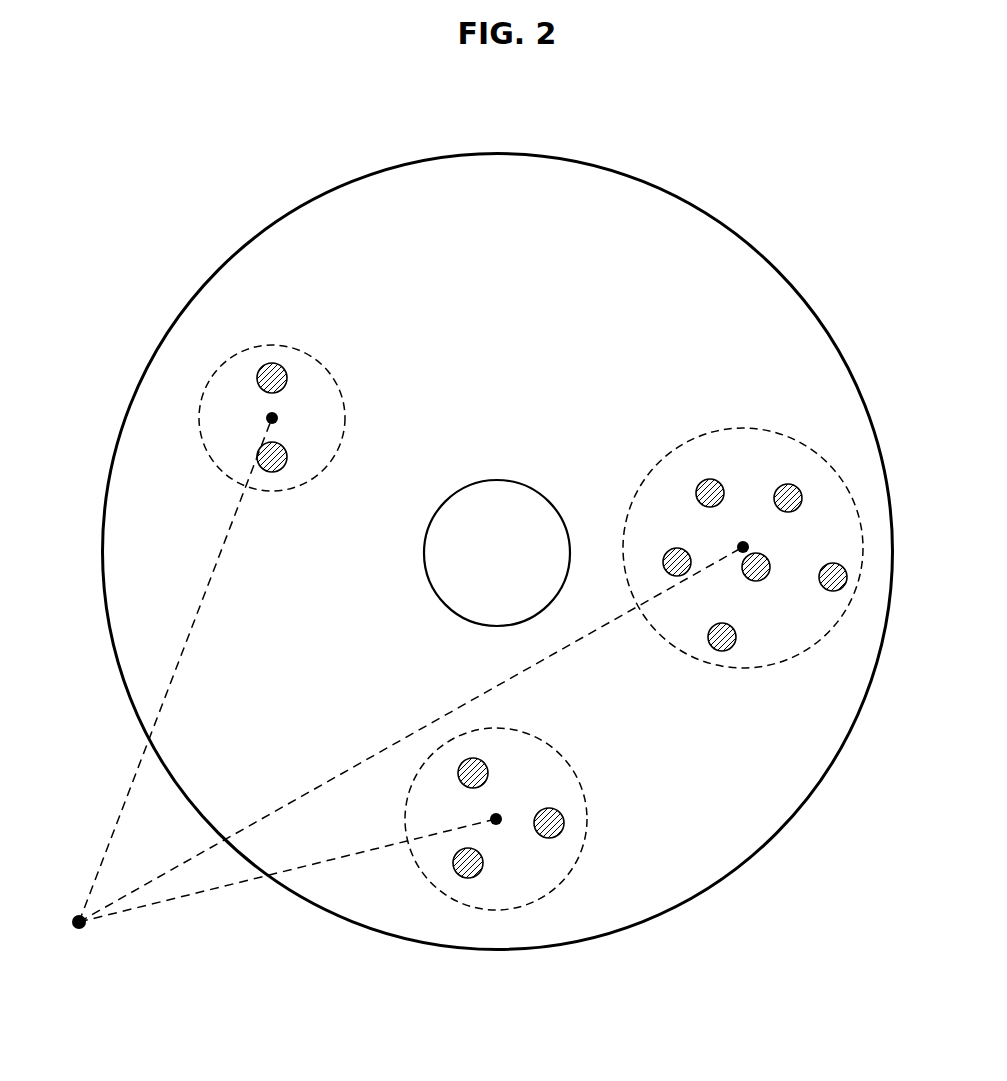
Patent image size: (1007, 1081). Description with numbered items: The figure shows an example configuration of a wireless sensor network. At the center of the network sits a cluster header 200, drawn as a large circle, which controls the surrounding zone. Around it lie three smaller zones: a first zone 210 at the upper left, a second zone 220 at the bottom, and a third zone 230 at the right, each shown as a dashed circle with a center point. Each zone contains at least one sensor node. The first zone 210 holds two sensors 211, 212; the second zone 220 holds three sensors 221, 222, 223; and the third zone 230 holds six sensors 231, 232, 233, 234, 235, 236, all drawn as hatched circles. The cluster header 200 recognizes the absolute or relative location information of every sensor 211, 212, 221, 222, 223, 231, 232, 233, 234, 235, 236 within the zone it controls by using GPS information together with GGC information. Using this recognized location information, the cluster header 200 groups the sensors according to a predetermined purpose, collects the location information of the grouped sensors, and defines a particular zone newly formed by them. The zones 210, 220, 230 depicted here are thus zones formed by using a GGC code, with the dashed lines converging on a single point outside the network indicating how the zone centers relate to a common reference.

The cluster header 200 is at (500, 478).
The first zone 210 is at (268, 492).
The sensor node 211 is at (271, 363).
The sensor node 212 is at (287, 455).
The second zone 220 is at (428, 757).
The sensor node 221 is at (481, 757).
The sensor node 222 is at (454, 865).
The sensor node 223 is at (564, 815).
The third zone 230 is at (743, 427).
The sensor node 231 is at (697, 483).
The sensor node 232 is at (677, 555).
The sensor node 233 is at (798, 490).
The sensor node 234 is at (767, 578).
The sensor node 235 is at (720, 650).
The sensor node 236 is at (847, 576).